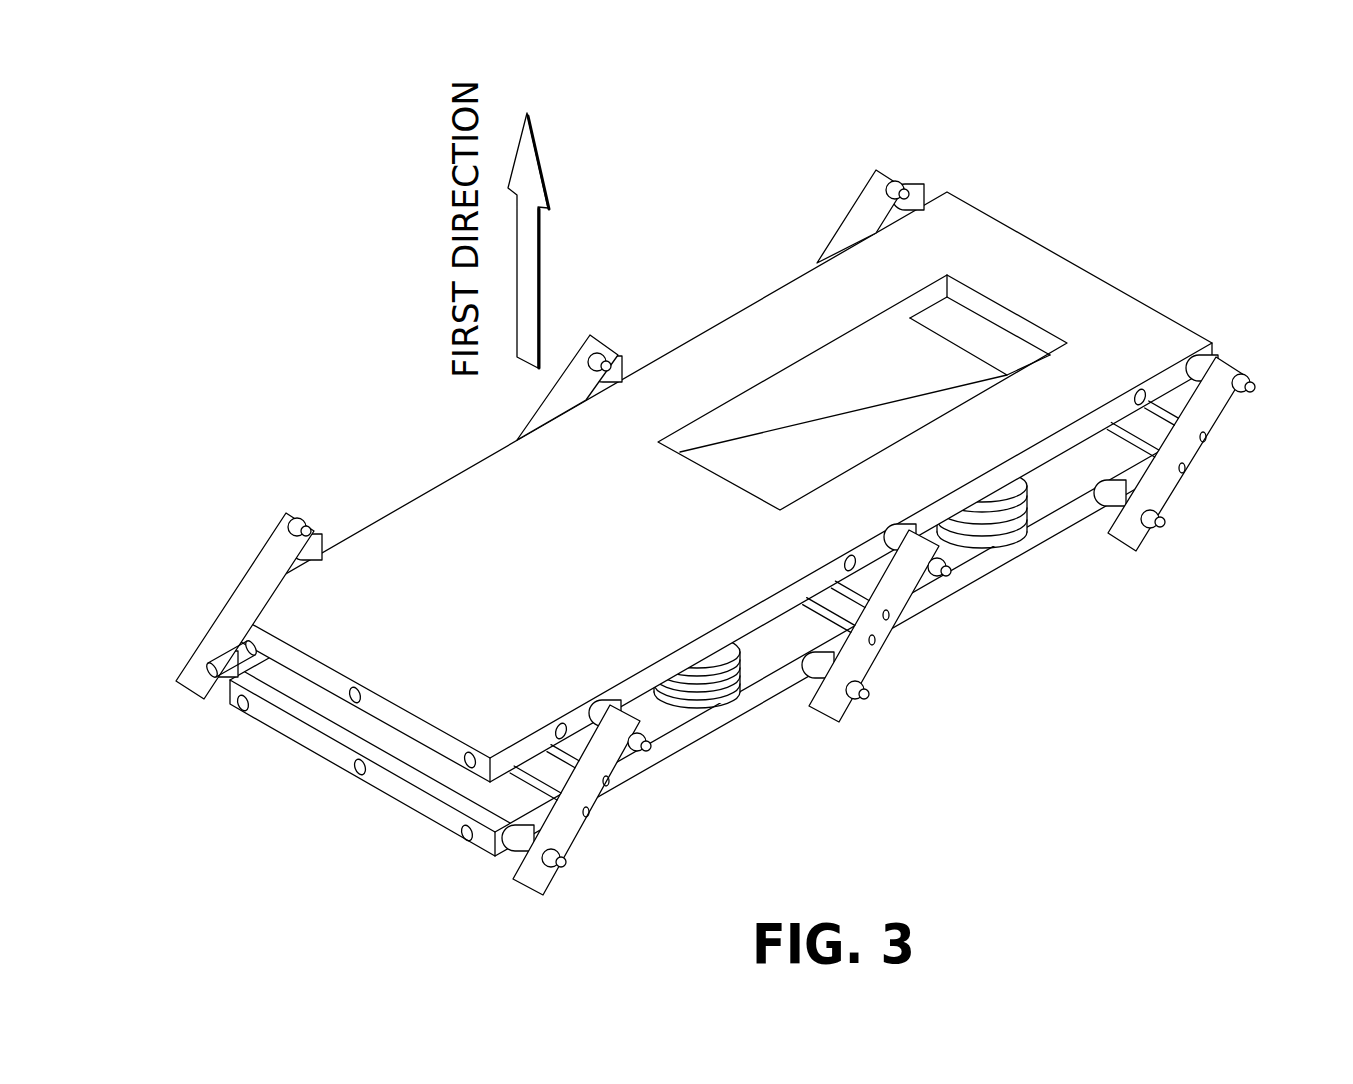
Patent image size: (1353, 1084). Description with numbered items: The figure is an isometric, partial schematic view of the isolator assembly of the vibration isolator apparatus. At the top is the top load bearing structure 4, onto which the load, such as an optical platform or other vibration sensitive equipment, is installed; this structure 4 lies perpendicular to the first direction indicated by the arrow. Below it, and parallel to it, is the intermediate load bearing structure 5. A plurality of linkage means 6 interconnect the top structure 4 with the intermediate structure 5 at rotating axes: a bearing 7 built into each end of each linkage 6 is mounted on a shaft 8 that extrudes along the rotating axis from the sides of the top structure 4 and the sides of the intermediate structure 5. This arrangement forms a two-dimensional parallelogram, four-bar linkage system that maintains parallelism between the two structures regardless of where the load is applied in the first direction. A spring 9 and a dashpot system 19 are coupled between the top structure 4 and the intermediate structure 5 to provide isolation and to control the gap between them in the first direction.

The top load bearing structure 4 is at (367, 567).
The intermediate load bearing structure 5 is at (1057, 490).
The linkage means 6 is at (881, 187).
The bearing 7 is at (895, 190).
The shaft 8 is at (908, 197).
The spring 9 is at (714, 678).
The dashpot system 19 is at (1003, 527).